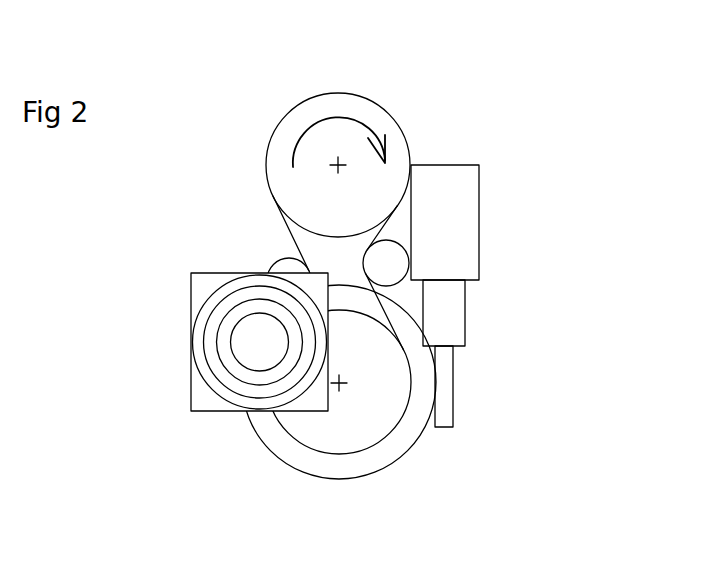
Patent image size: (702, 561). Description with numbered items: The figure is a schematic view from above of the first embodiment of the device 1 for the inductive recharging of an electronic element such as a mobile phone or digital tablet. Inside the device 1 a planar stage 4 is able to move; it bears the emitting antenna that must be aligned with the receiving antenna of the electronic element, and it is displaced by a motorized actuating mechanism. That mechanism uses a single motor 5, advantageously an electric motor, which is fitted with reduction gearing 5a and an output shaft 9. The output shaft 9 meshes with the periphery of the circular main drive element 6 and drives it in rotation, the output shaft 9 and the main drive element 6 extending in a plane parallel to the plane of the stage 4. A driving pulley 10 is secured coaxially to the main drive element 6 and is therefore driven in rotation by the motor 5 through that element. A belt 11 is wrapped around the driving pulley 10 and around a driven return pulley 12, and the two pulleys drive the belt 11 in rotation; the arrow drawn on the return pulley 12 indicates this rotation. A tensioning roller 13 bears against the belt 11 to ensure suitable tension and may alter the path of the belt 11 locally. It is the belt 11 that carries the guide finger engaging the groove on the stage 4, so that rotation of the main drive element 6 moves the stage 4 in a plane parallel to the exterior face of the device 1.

The device 1 is at (513, 244).
The stage 4 is at (200, 399).
The motor 5 is at (461, 217).
The reduction gearing 5a is at (447, 323).
The main drive element 6 is at (365, 460).
The output shaft 9 is at (443, 392).
The driving pulley 10 is at (392, 397).
The belt 11 is at (290, 233).
The driven return pulley 12 is at (368, 97).
The tensioning roller 13 is at (386, 263).